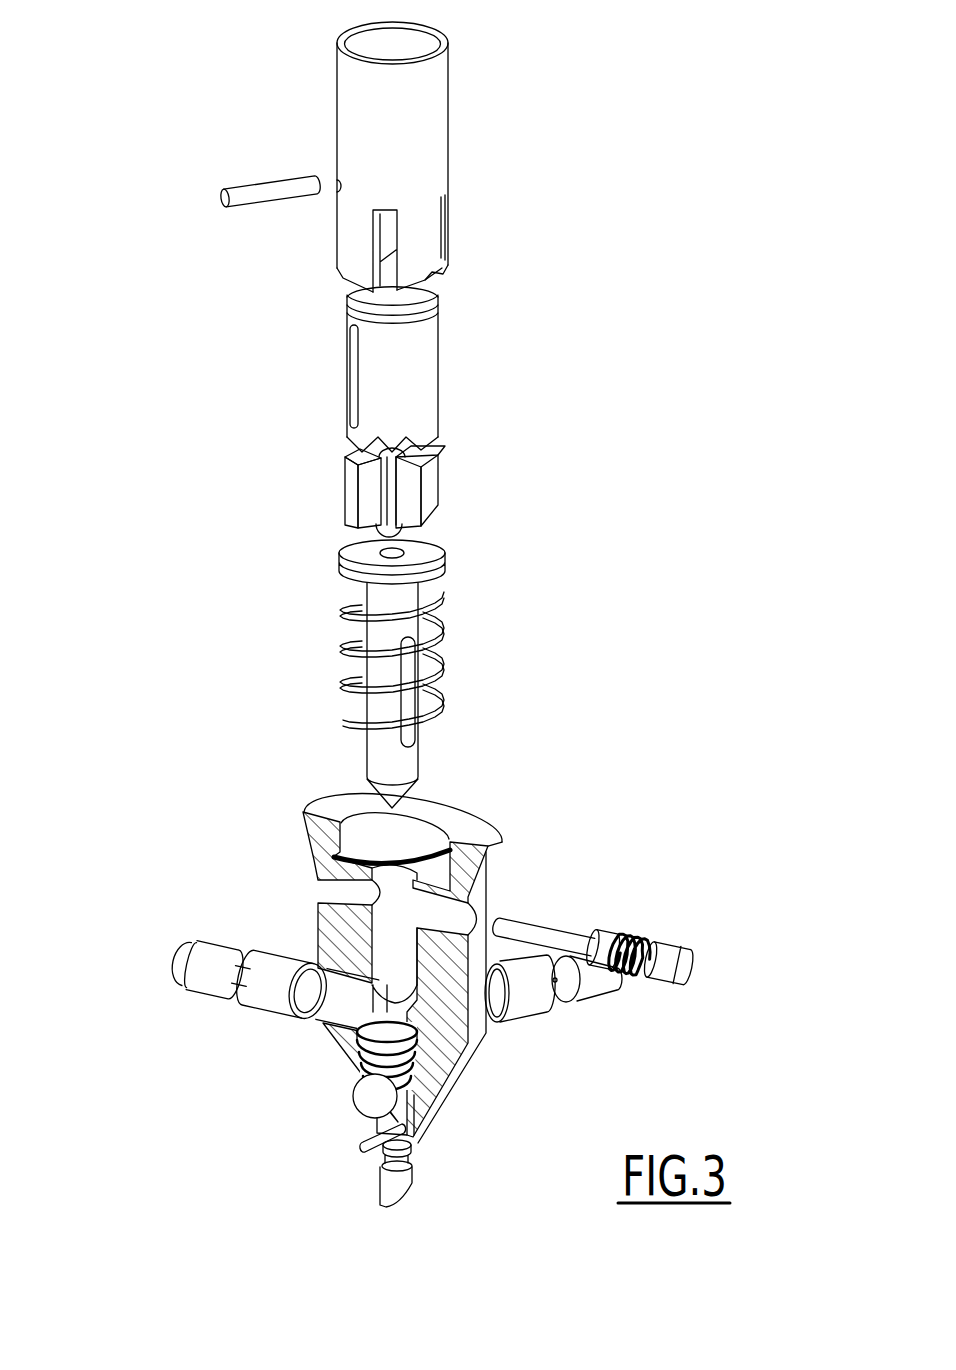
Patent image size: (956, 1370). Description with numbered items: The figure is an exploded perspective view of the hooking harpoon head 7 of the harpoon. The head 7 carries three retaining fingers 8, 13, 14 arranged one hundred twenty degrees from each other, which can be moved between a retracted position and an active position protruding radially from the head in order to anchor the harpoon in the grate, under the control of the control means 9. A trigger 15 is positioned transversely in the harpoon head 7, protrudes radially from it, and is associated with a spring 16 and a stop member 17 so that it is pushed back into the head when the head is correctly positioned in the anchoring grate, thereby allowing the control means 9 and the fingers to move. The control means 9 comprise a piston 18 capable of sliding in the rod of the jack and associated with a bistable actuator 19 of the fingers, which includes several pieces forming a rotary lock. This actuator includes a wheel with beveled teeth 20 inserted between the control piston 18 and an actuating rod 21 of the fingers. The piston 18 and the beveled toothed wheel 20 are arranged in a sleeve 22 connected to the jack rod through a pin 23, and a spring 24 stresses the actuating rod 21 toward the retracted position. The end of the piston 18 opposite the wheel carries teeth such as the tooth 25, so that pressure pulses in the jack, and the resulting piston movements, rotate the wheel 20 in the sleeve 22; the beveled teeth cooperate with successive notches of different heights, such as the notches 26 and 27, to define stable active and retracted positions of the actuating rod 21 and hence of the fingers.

The harpoon head 7 is at (236, 1064).
The retaining finger 8 is at (577, 1022).
The control means 9 is at (379, 674).
The retaining finger 13 is at (178, 990).
The retaining finger 14 is at (338, 1108).
The trigger 15 is at (560, 910).
The spring 16 is at (644, 930).
The stop member 17 is at (708, 958).
The piston 18 is at (432, 366).
The bistable actuator 19 is at (385, 485).
The wheel with beveled teeth 20 is at (459, 485).
The actuating rod 21 is at (436, 631).
The sleeve 22 is at (455, 194).
The pin 23 is at (242, 180).
The spring 24 is at (459, 672).
The tooth 25 is at (449, 432).
The notch 26 is at (395, 200).
The notch 27 is at (445, 283).